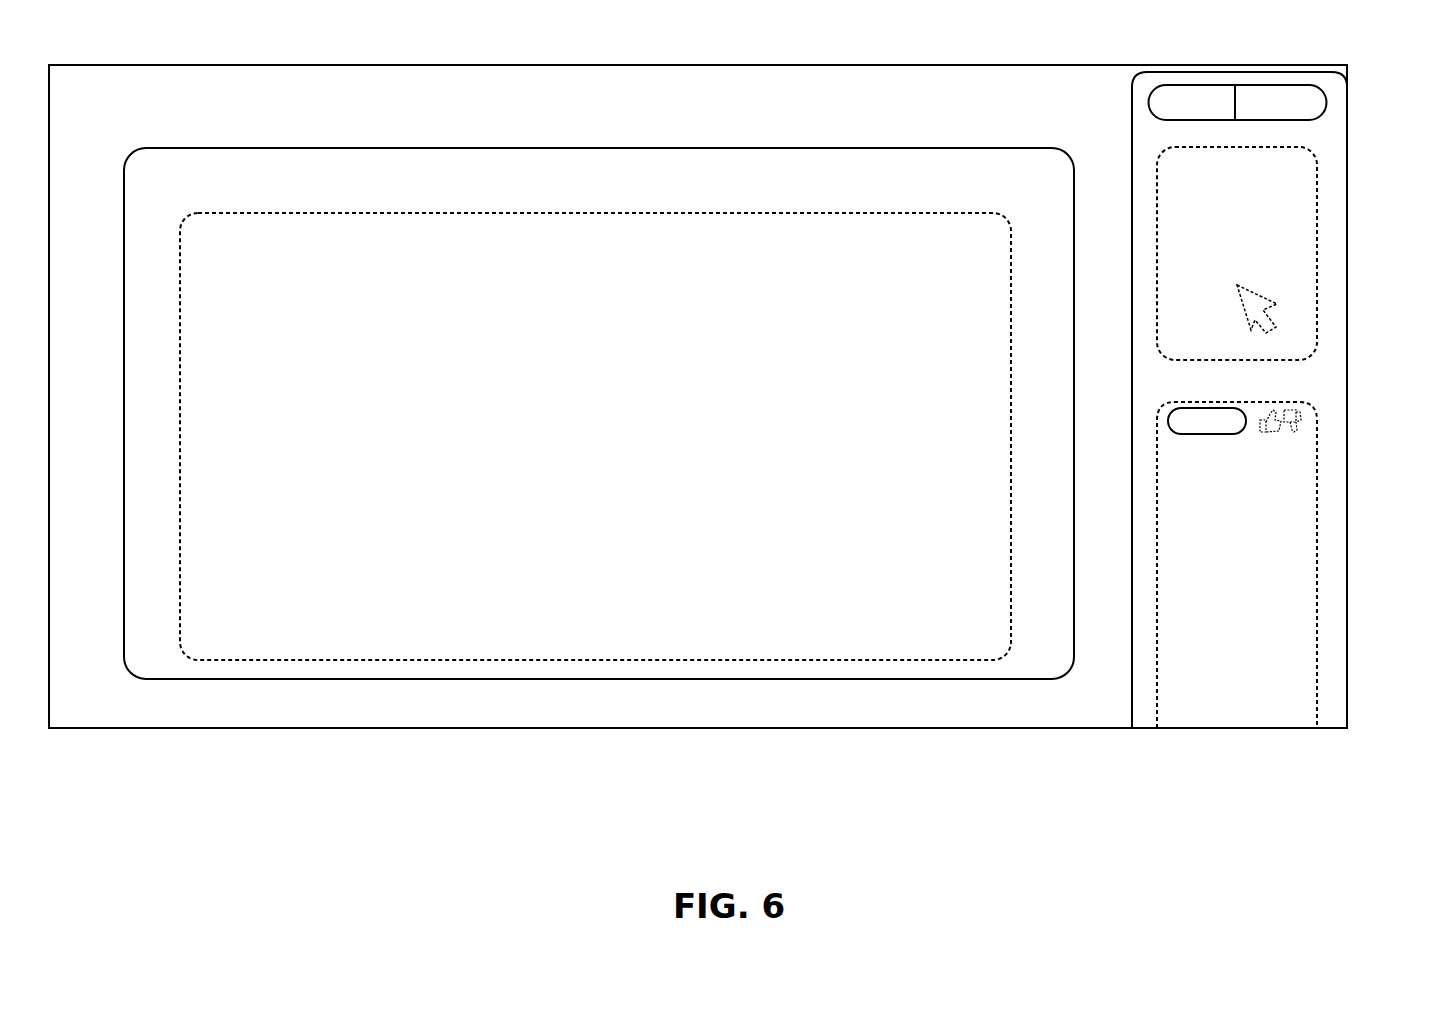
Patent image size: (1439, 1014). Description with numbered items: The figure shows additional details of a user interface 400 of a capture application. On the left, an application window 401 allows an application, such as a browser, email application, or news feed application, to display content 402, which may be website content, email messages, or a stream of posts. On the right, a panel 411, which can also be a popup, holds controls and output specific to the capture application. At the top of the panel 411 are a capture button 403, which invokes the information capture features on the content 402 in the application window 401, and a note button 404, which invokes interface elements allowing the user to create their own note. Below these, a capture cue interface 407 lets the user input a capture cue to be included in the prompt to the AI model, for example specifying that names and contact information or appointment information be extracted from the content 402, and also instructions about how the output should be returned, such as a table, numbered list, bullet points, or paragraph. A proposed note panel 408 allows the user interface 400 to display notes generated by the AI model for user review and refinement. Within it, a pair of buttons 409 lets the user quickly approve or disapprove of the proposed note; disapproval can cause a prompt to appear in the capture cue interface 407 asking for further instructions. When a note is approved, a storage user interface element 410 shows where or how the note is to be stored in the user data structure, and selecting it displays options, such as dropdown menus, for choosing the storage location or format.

The user interface 400 is at (300, 66).
The application window 401 is at (290, 161).
The content 402 is at (455, 218).
The capture button 403 is at (1181, 100).
The note button 404 is at (1268, 103).
The capture cue interface 407 is at (1287, 222).
The proposed note panel 408 is at (1283, 500).
The pair of buttons 409 is at (1294, 426).
The storage user interface element 410 is at (1185, 425).
The panel 411 is at (1323, 123).